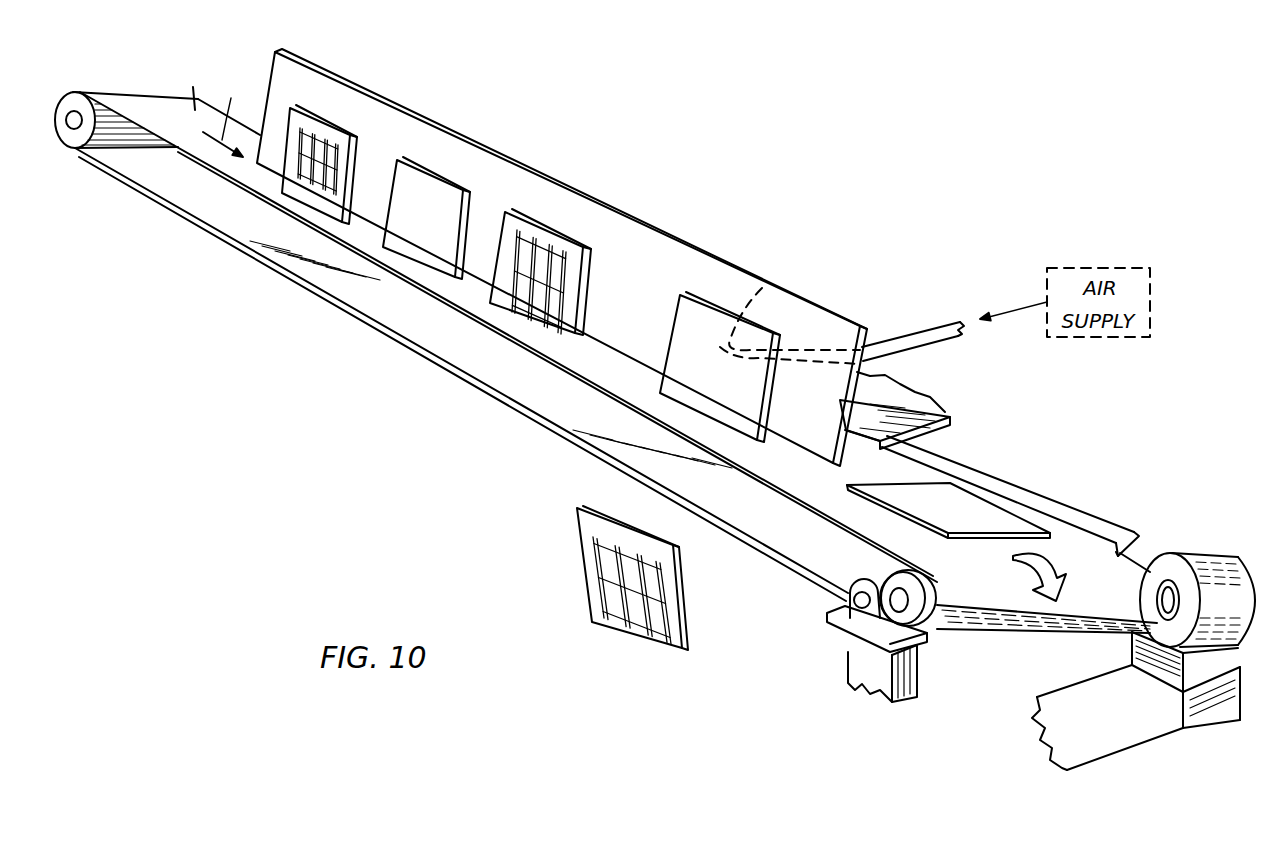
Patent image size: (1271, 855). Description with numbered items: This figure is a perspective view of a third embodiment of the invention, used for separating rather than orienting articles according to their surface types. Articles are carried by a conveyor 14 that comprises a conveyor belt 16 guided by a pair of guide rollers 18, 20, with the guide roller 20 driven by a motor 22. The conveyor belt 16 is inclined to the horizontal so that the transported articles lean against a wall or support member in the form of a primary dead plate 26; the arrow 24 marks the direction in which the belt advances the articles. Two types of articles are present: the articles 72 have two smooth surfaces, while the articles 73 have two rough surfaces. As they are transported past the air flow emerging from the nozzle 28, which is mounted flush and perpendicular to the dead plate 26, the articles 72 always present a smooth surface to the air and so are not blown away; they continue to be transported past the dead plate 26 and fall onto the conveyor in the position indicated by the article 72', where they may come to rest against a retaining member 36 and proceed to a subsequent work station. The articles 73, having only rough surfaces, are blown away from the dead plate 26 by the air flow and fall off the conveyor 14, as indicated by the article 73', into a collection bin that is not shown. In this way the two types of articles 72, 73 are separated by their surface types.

The conveyor 14 is at (121, 83).
The conveyor belt 16 is at (194, 87).
The guide roller 18 is at (78, 152).
The guide roller 20 is at (928, 627).
The motor 22 is at (1206, 566).
The direction of belt travel 24 is at (228, 118).
The primary dead plate 26 is at (835, 312).
The nozzle 28 is at (775, 286).
The retaining member 36 is at (1083, 520).
The articles 72 is at (581, 275).
The articles 73 is at (437, 191).
The article 72' is at (948, 481).
The article 73' is at (595, 578).